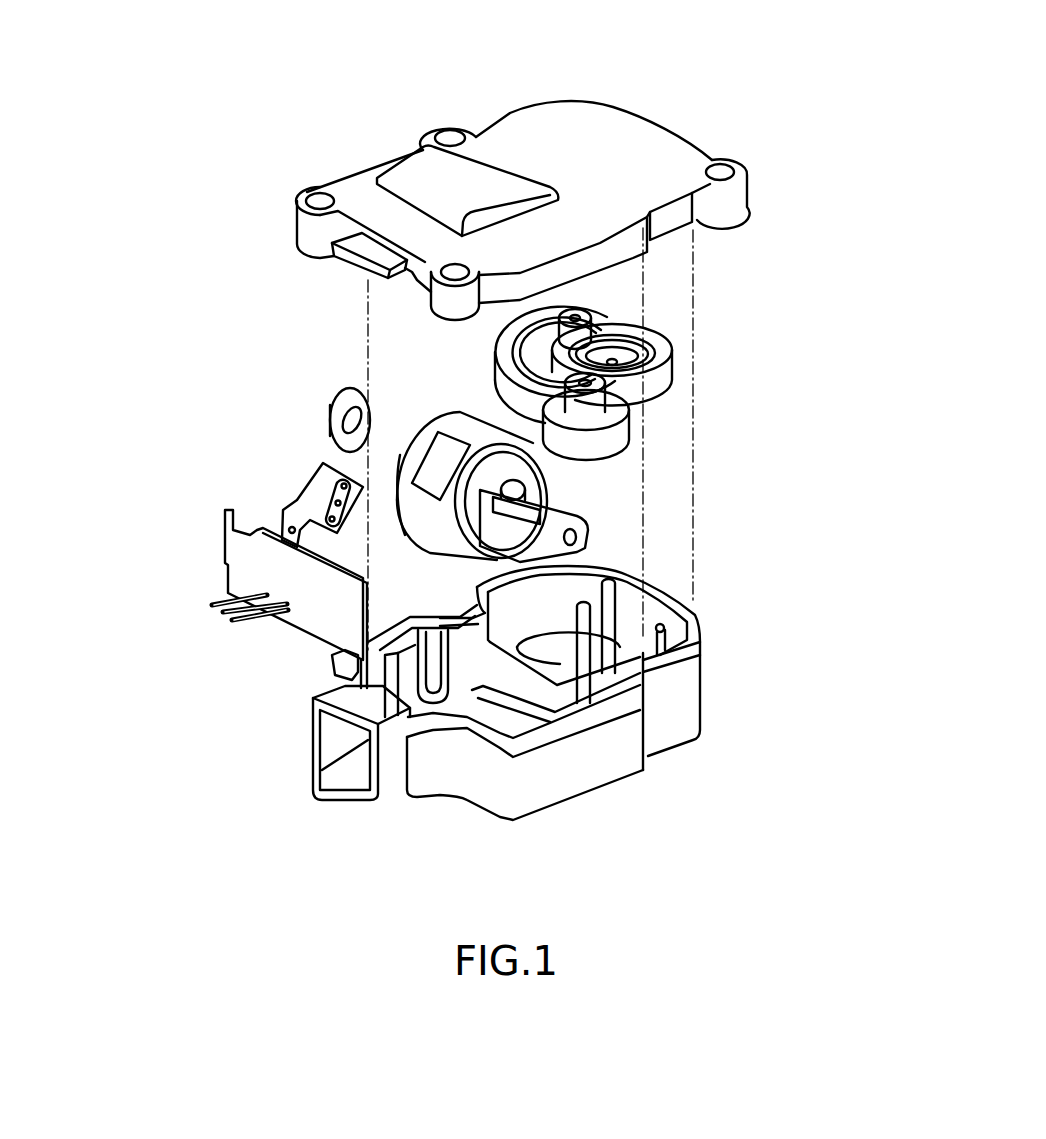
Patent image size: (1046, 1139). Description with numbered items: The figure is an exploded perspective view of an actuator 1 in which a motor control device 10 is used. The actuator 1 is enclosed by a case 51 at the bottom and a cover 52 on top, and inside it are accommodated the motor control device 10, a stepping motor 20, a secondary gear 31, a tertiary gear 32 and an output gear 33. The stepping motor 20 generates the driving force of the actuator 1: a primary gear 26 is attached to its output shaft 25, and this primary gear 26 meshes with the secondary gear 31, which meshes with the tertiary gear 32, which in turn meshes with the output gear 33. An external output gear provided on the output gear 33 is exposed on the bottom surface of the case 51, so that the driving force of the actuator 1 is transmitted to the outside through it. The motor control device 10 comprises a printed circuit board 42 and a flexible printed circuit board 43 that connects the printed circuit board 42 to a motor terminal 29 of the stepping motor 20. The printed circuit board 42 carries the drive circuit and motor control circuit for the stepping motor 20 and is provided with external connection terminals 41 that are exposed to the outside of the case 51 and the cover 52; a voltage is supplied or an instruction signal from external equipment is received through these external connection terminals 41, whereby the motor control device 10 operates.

The actuator 1 is at (803, 27).
The motor control device 10 is at (229, 563).
The stepping motor 20 is at (523, 445).
The output shaft 25 is at (517, 480).
The primary gear 26 is at (552, 492).
The motor terminal 29 is at (410, 480).
The secondary gear 31 is at (613, 438).
The tertiary gear 32 is at (658, 358).
The output gear 33 is at (608, 308).
The external connection terminals 41 is at (233, 617).
The printed circuit board 42 is at (267, 550).
The flexible printed circuit board 43 is at (327, 477).
The case 51 is at (540, 788).
The cover 52 is at (598, 127).